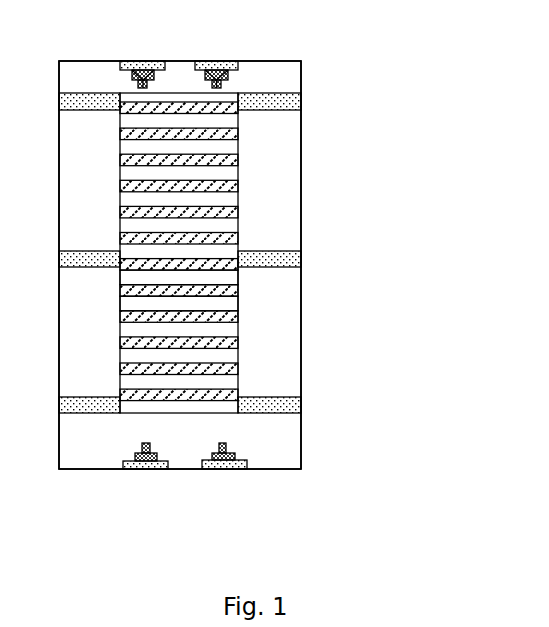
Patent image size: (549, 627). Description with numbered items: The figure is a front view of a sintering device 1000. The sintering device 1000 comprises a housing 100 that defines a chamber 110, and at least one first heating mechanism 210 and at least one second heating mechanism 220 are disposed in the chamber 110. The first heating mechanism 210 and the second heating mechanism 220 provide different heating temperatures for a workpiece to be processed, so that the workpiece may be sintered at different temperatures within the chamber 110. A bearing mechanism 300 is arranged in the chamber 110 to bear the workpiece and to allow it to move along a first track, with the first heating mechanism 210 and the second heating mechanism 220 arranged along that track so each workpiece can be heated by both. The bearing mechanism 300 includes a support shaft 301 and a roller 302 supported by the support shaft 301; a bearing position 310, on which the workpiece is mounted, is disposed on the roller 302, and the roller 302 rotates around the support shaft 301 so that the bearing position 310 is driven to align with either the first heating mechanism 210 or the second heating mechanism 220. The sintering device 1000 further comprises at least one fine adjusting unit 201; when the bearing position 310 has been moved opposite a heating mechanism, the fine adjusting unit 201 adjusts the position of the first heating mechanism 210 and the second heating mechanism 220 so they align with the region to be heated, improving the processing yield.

The sintering device 1000 is at (215, 546).
The housing 100 is at (300, 162).
The chamber 110 is at (283, 217).
The fine adjusting unit 201 is at (208, 63).
The first heating mechanism 210 is at (217, 83).
The second heating mechanism 220 is at (223, 445).
The bearing mechanism 300 is at (405, 222).
The support shaft 301 is at (280, 260).
The roller 302 is at (230, 303).
The bearing position 310 is at (228, 348).